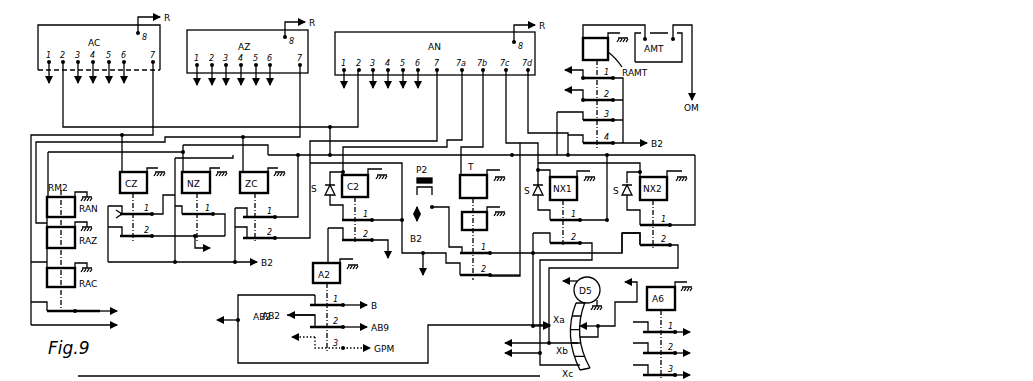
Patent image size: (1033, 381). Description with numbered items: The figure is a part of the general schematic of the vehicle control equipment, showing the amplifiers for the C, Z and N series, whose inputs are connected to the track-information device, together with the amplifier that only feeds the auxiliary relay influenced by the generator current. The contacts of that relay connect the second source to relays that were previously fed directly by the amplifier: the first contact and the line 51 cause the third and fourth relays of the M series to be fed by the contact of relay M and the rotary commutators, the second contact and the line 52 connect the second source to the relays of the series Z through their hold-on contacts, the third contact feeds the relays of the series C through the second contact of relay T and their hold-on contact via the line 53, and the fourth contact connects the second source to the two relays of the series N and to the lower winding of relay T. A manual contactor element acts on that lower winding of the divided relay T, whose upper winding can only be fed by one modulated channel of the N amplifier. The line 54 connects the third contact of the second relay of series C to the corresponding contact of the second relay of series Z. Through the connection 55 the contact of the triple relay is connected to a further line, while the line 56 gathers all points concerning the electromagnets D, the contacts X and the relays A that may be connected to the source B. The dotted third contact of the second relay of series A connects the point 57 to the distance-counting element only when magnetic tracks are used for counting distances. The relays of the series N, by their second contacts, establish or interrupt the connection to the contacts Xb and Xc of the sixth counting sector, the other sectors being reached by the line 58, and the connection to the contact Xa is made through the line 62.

The line 51 is at (567, 72).
The line 52 is at (389, 170).
The line 53 is at (421, 270).
The line 54 is at (382, 257).
The connection 55 is at (80, 313).
The line 56 is at (219, 321).
The point 57 is at (295, 338).
The line 58 is at (535, 348).
The signal line to rotary switch D5 wiper Xa 62 is at (577, 309).